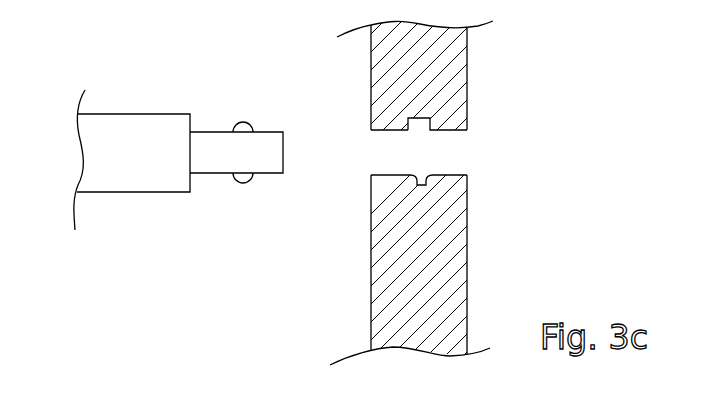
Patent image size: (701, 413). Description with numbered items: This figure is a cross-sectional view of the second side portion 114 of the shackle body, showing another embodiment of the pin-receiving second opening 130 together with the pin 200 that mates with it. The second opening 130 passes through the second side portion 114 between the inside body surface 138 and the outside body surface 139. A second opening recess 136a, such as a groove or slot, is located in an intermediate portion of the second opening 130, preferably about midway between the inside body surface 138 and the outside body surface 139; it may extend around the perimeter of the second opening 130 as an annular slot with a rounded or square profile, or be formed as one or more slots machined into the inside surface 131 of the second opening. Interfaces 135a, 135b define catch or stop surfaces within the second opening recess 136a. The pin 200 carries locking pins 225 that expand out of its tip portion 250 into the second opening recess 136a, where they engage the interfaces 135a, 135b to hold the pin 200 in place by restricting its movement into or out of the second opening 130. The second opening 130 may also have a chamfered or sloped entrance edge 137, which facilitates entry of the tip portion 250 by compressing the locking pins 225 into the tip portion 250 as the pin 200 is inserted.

The pin 200 is at (132, 140).
The locking pins 225 is at (240, 122).
The tip portion 250 is at (265, 153).
The chamfered or sloped entrance edge 137 is at (373, 128).
The inside body surface 138 is at (370, 48).
The outside body surface 139 is at (468, 55).
The inside surface of second opening 131 is at (395, 131).
The second opening recess 136a is at (420, 128).
The second opening 130 is at (356, 165).
The interface 135a is at (411, 185).
The interface 135b is at (426, 185).
The second side portion 114 is at (443, 200).